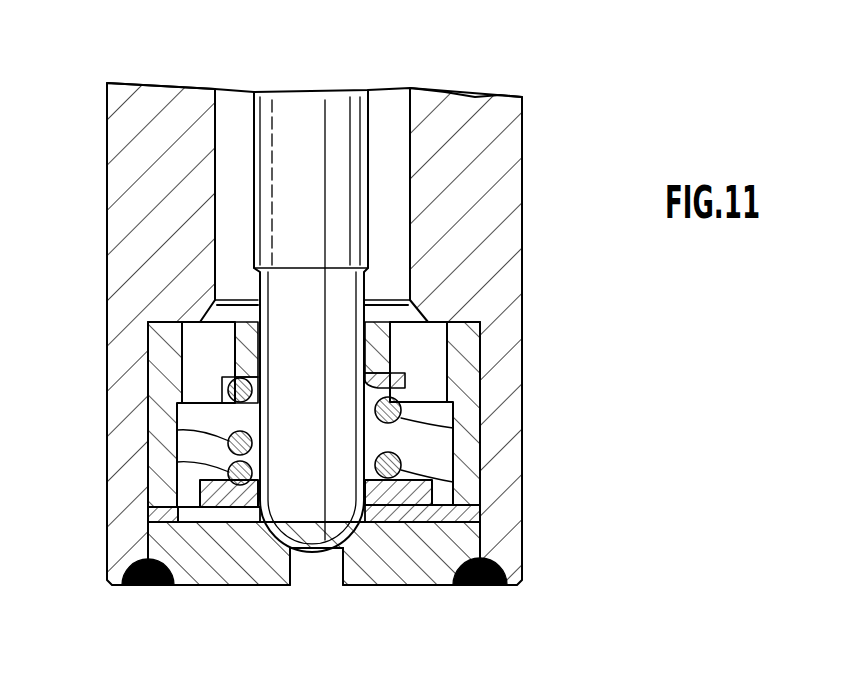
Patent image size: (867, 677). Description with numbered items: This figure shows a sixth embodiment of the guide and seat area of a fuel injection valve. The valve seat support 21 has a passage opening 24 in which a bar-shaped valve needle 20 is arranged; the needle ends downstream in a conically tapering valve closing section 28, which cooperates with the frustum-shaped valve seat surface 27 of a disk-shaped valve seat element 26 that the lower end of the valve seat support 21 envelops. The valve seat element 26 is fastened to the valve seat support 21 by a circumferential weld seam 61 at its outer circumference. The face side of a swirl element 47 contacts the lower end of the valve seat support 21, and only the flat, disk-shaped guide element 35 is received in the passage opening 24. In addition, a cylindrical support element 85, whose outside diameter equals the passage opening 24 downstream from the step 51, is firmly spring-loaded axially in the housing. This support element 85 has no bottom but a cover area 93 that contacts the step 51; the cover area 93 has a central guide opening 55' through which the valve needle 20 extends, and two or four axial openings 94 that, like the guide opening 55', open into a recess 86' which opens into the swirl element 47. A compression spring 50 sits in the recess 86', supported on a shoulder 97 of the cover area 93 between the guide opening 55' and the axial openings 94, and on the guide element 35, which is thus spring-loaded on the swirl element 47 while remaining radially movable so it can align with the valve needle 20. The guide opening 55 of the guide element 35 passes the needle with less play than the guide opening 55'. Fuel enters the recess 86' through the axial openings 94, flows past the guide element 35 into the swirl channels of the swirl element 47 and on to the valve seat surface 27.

The valve needle 20 is at (355, 132).
The valve seat support 21 is at (128, 166).
The passage opening 24 is at (218, 203).
The valve seat element 26 is at (422, 568).
The valve seat surface 27 is at (320, 552).
The valve closing section 28 is at (290, 552).
The guide element 35 is at (430, 490).
The swirl element 47 is at (482, 512).
The compression spring 50 is at (230, 441).
The step 51 is at (416, 324).
The guide opening 55 is at (258, 483).
The guide opening 55' is at (332, 345).
The weld seam 61 is at (153, 587).
The support element 85 is at (470, 385).
The recess 86' is at (153, 491).
The cover area 93 is at (247, 333).
The axial openings 94 is at (197, 367).
The shoulder 97 is at (263, 386).